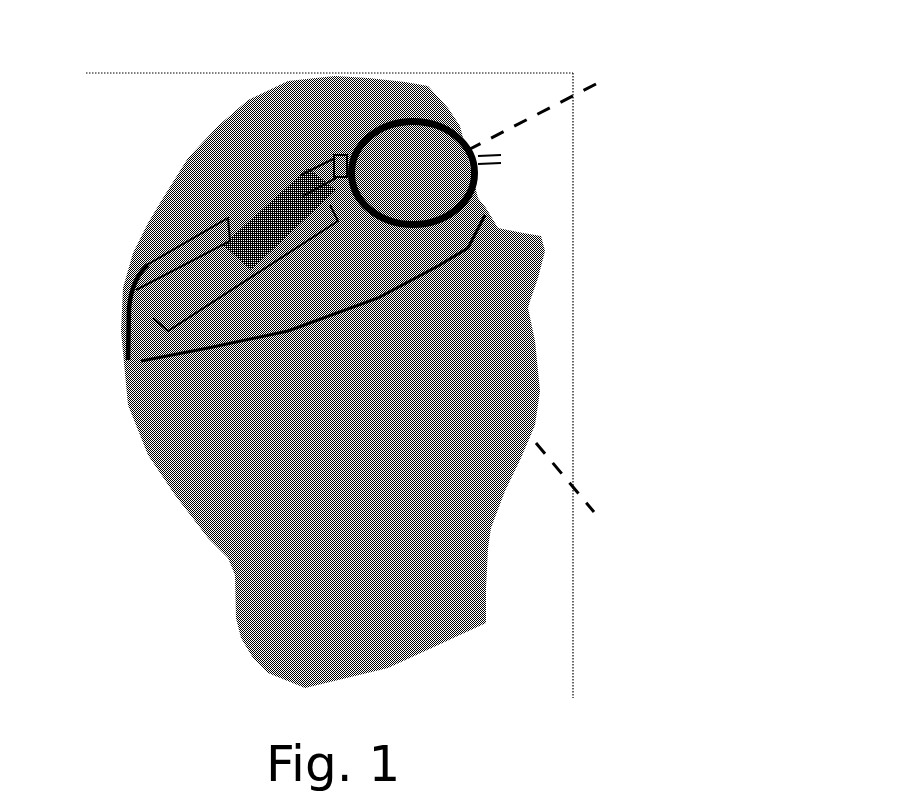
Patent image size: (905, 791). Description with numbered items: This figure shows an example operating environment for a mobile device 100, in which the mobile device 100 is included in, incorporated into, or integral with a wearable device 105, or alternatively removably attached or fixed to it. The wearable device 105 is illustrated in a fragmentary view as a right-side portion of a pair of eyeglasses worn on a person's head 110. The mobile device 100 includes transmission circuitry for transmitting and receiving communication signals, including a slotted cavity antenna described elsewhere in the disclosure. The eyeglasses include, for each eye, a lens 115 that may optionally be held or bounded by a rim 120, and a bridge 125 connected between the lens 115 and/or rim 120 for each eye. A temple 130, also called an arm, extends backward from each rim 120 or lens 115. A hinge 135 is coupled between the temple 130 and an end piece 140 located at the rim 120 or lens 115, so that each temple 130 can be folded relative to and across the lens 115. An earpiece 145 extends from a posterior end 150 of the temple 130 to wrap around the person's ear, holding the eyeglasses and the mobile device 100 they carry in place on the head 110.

The mobile device 100 is at (248, 178).
The wearable device 105 is at (315, 313).
The head 110 is at (428, 70).
The lens 115 is at (435, 177).
The rim 120 is at (447, 110).
The bridge 125 is at (492, 145).
The temple 130 is at (253, 262).
The hinge 135 is at (327, 147).
The end piece 140 is at (337, 145).
The earpiece 145 is at (120, 297).
The posterior end 150 is at (137, 258).